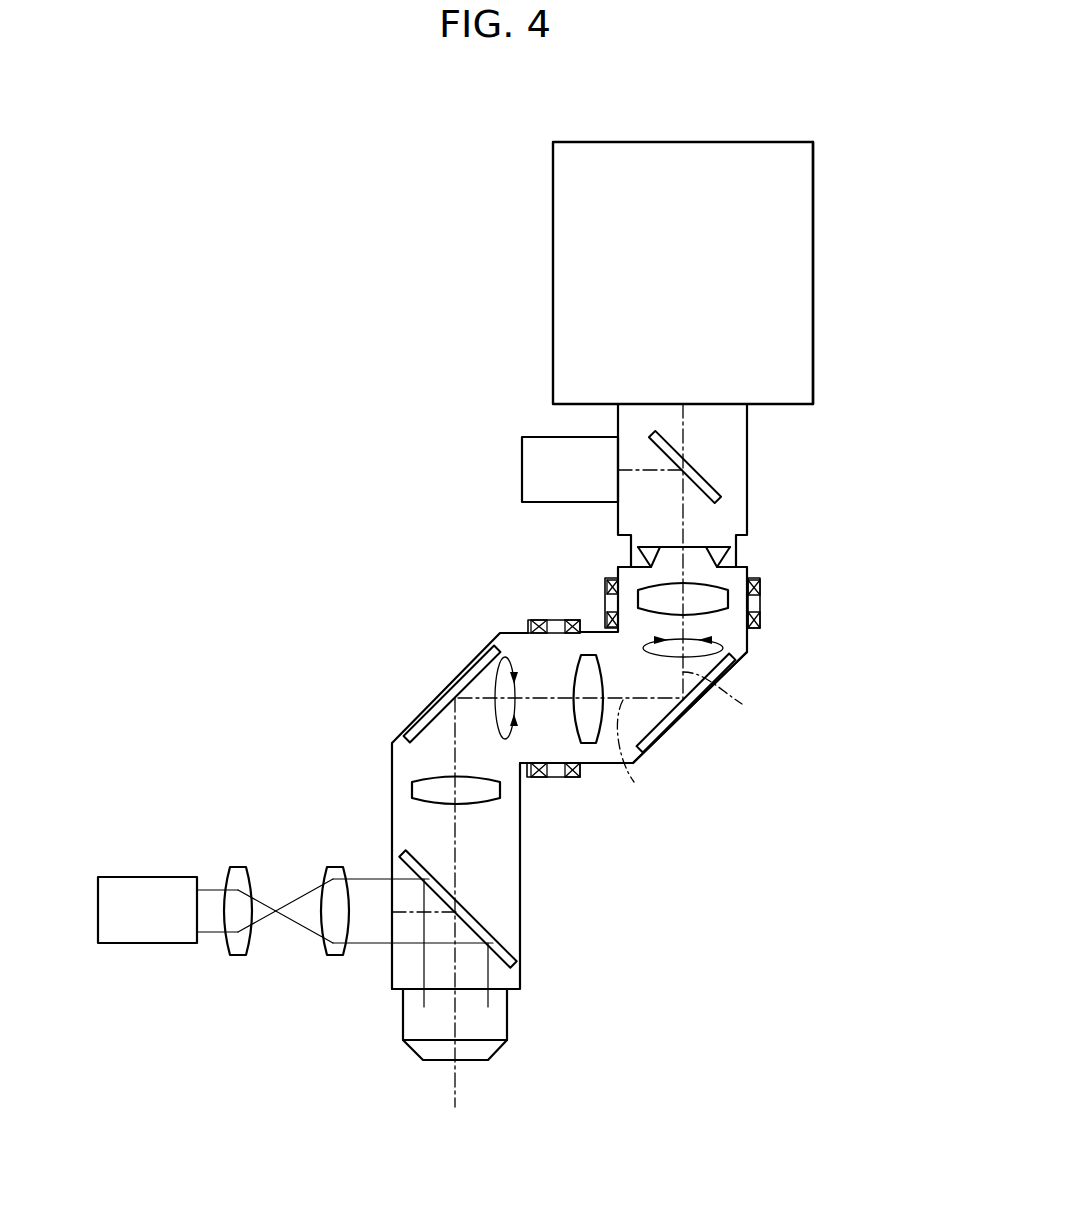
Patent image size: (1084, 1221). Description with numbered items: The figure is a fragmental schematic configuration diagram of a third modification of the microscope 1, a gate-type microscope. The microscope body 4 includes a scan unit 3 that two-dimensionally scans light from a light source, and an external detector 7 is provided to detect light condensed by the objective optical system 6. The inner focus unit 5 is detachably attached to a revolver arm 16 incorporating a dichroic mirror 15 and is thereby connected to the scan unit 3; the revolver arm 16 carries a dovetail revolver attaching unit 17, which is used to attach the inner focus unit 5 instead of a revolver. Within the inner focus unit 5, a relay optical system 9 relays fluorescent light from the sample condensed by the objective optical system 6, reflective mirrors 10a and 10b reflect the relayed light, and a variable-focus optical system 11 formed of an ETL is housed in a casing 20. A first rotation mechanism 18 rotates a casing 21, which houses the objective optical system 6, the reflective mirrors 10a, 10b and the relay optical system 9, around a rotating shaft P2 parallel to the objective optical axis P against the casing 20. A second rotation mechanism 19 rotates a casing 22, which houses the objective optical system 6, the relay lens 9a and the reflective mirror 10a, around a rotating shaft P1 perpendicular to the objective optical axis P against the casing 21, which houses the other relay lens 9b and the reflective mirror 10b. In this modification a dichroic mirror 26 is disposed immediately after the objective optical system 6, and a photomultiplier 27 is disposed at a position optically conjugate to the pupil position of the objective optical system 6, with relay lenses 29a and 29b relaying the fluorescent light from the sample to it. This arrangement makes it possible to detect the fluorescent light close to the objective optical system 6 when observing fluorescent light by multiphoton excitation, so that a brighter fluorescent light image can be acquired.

The microscope 1 is at (871, 92).
The scan unit 3 is at (553, 212).
The microscope body 4 is at (826, 247).
The inner focus unit 5 is at (701, 721).
The objective optical system 6 is at (403, 1010).
The external detector 7 is at (522, 467).
The relay optical system 9 is at (544, 661).
The relay lens 9a is at (412, 788).
The relay lens 9b is at (590, 654).
The reflective mirror 10a is at (427, 706).
The reflective mirror 10b is at (668, 742).
The variable-focus optical system 11 is at (718, 612).
The dichroic mirror 15 is at (720, 490).
The revolver arm 16 is at (748, 428).
The revolver attaching unit 17 is at (638, 551).
The first rotation mechanism 18 is at (774, 610).
The second rotation mechanism 19 is at (546, 792).
The casing 20 is at (750, 572).
The casing 21 is at (594, 776).
The casing 22 is at (520, 897).
The dichroic mirror 26 is at (500, 946).
The photomultiplier 27 is at (140, 877).
The relay lens 29a is at (335, 867).
The relay lens 29b is at (238, 867).
The objective optical axis P is at (458, 1083).
The rotating shaft P1 is at (632, 755).
The rotating shaft P2 is at (727, 694).